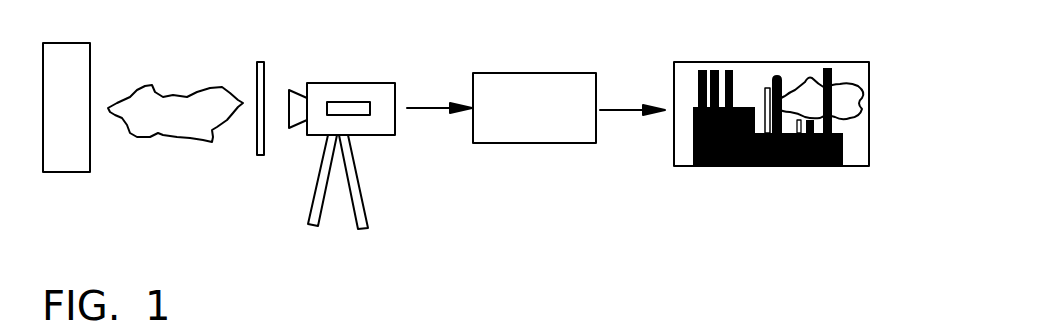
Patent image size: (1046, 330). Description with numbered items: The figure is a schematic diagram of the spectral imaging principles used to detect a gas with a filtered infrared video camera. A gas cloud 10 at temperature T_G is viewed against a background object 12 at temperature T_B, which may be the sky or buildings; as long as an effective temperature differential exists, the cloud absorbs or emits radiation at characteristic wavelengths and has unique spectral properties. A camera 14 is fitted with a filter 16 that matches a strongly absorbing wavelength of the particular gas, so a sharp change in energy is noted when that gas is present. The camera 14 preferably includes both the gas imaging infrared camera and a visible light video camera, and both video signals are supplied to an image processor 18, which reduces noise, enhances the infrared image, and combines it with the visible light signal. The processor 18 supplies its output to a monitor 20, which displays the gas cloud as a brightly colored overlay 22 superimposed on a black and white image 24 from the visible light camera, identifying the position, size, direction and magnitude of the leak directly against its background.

The gas cloud 10 is at (170, 95).
The background object 12 is at (77, 48).
The camera 14 is at (352, 95).
The filter 16 is at (265, 70).
The image processor 18 is at (532, 75).
The monitor 20 is at (711, 62).
The overlay 22 is at (851, 82).
The black and white image 24 is at (755, 107).